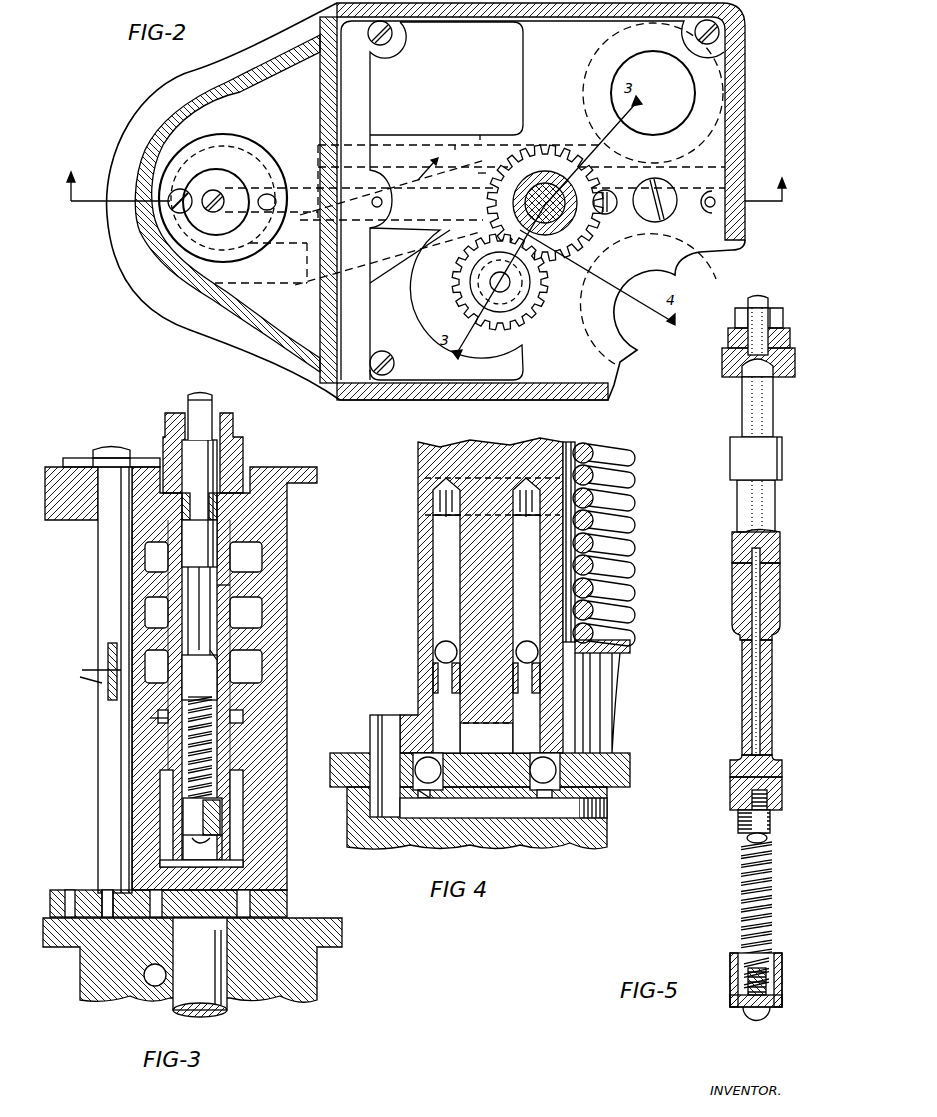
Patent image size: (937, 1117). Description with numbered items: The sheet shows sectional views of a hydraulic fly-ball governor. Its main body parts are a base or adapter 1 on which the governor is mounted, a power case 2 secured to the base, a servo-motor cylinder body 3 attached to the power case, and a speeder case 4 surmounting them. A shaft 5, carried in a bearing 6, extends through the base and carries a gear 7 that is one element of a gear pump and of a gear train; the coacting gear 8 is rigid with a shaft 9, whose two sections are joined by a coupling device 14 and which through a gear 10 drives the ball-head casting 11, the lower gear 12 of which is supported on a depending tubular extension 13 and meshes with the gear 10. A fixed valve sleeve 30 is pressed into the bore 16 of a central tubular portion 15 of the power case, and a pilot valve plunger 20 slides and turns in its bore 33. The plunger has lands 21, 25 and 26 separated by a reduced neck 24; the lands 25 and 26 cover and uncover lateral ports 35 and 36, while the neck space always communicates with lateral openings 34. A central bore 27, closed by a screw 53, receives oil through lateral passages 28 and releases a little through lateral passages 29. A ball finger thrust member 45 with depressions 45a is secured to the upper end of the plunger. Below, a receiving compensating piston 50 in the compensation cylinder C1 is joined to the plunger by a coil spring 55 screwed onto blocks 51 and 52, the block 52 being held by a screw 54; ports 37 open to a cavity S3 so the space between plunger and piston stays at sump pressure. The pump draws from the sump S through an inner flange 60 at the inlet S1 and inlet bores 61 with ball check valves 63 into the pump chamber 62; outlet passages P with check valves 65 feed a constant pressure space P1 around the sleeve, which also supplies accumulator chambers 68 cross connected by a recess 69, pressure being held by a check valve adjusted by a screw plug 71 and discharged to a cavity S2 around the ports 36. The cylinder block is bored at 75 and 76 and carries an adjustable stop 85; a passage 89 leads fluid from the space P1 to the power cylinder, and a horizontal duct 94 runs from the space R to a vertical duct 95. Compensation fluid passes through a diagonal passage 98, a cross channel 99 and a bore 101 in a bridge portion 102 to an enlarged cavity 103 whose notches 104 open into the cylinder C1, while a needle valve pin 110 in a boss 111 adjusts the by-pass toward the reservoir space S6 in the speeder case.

In FIG. 2, the base or adapter 1 is at (422, 177).
In FIG. 3, the base or adapter 1 is at (310, 967).
In FIG. 3, the power case 2 is at (283, 467).
In FIG. 2, the servo-motor cylinder body 3 is at (124, 126).
In FIG. 2, the speeder case 4 is at (182, 97).
In FIG. 3, the shaft 5 is at (200, 967).
In FIG. 3, the bearing 6 is at (199, 614).
In FIG. 3, the gear 7 is at (250, 900).
In FIG. 3, the gear 8 is at (85, 907).
In FIG. 3, the shaft 9 is at (93, 680).
In FIG. 2, the gear 10 is at (532, 304).
In FIG. 3, the gear 10 is at (90, 460).
In FIG. 3, the ball-head casting 11 is at (243, 420).
In FIG. 2, the gear 12 is at (580, 222).
In FIG. 2, the depending tubular extension 13 is at (606, 195).
In FIG. 2, the flexible coupling device 14 is at (428, 310).
In FIG. 3, the flexible coupling device 14 is at (108, 657).
In FIG. 2, the central tubular portion 15 is at (480, 173).
In FIG. 3, the central tubular portion 15 is at (140, 733).
In FIG. 3, the bore 16 is at (233, 772).
In FIG. 2, the pilot valve plunger 20 is at (550, 240).
In FIG. 3, the pilot valve plunger 20 is at (193, 405).
In FIG. 5, the pilot valve plunger 20 is at (738, 518).
In FIG. 5, the land 21 is at (735, 480).
In FIG. 5, the neck or reduced portion 24 is at (773, 710).
In FIG. 3, the land 25 is at (199, 677).
In FIG. 5, the land 25 is at (730, 787).
In FIG. 3, the land 26 is at (199, 503).
In FIG. 5, the land 26 is at (732, 598).
In FIG. 5, the central bore 27 is at (760, 653).
In FIG. 3, the lateral passages 28 is at (206, 658).
In FIG. 5, the lateral passages 28 is at (777, 767).
In FIG. 3, the lateral passages 29 is at (199, 506).
In FIG. 5, the lateral passages 29 is at (743, 555).
In FIG. 2, the valve sleeve 30 is at (565, 175).
In FIG. 3, the valve sleeve 30 is at (232, 527).
In FIG. 3, the bore 33 is at (220, 588).
In FIG. 3, the lateral openings 34 is at (246, 612).
In FIG. 3, the lateral ports 35 is at (246, 666).
In FIG. 3, the lateral ports 36 is at (246, 557).
In FIG. 3, the ports 37 is at (243, 725).
In FIG. 5, the ball finger thrust member 45 is at (726, 362).
In FIG. 5, the depressions 45a is at (760, 378).
In FIG. 3, the receiving compensating piston 50 is at (212, 820).
In FIG. 5, the receiving compensating piston 50 is at (732, 967).
In FIG. 3, the sleeve or block 51 is at (213, 703).
In FIG. 5, the sleeve or block 51 is at (770, 823).
In FIG. 5, the sleeve or block 52 is at (775, 977).
In FIG. 5, the screw 53 is at (767, 841).
In FIG. 5, the screw 54 is at (743, 1009).
In FIG. 3, the coil spring 55 is at (212, 758).
In FIG. 5, the coil spring 55 is at (740, 895).
In FIG. 4, the inner flange 60 is at (372, 735).
In FIG. 4, the inlet bores 61 is at (430, 785).
In FIG. 4, the pump chamber 62 is at (480, 786).
In FIG. 4, the ball check valves 63 is at (432, 797).
In FIG. 4, the check valves 65 is at (527, 650).
In FIG. 2, the accumulator chambers 68 is at (651, 193).
In FIG. 4, the accumulator chambers 68 is at (593, 447).
In FIG. 2, the recess 69 is at (703, 252).
In FIG. 4, the recess 69 is at (605, 742).
In FIG. 2, the screw plug 71 is at (668, 192).
In FIG. 2, the main power cylinder bore 75 is at (170, 262).
In FIG. 2, the bore 76 is at (215, 255).
In FIG. 2, the adjustable stop 85 is at (170, 203).
In FIG. 2, the passage 89 is at (290, 185).
In FIG. 2, the horizontal duct 94 is at (405, 265).
In FIG. 2, the vertical duct 95 is at (303, 287).
In FIG. 2, the diagonally extending passage 98 is at (372, 202).
In FIG. 2, the cross channel 99 is at (317, 170).
In FIG. 2, the bore 101 is at (455, 145).
In FIG. 2, the bridge portion 102 is at (480, 135).
In FIG. 3, the enlarged cavity 103 is at (163, 800).
In FIG. 3, the notches 104 is at (240, 861).
In FIG. 2, the needle valve pin 110 is at (205, 212).
In FIG. 2, the boss 111 is at (212, 172).
In FIG. 2, the sump space S is at (446, 201).
In FIG. 3, the pump inlet S1 is at (155, 975).
In FIG. 4, the pump inlet S1 is at (503, 808).
In FIG. 3, the cavity S2 is at (156, 557).
In FIG. 3, the cavity S3 is at (160, 718).
In FIG. 2, the reservoir space S6 is at (168, 151).
In FIG. 4, the outlet passages P is at (492, 615).
In FIG. 3, the constant pressure space P1 is at (156, 666).
In FIG. 4, the constant pressure space P1 is at (485, 478).
In FIG. 3, the space R is at (156, 612).
In FIG. 3, the receiving compensation cylinder C1 is at (202, 848).